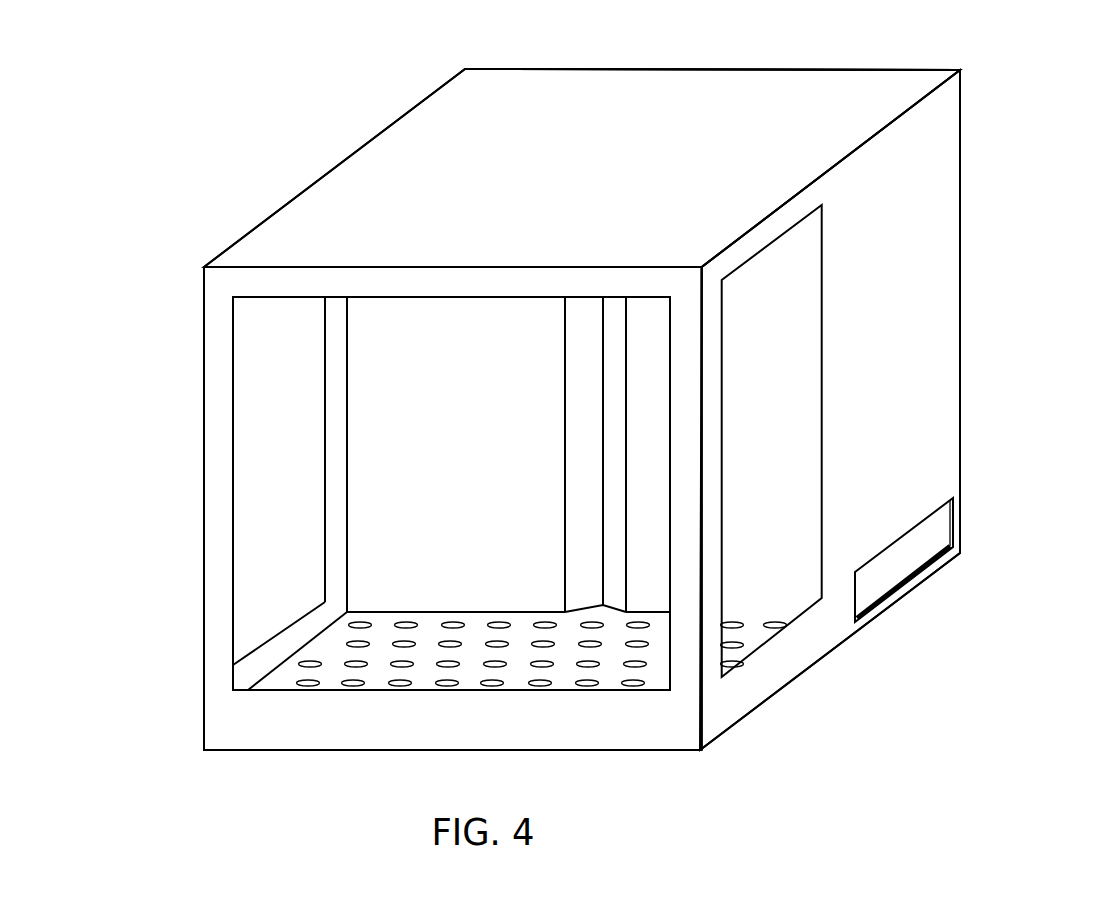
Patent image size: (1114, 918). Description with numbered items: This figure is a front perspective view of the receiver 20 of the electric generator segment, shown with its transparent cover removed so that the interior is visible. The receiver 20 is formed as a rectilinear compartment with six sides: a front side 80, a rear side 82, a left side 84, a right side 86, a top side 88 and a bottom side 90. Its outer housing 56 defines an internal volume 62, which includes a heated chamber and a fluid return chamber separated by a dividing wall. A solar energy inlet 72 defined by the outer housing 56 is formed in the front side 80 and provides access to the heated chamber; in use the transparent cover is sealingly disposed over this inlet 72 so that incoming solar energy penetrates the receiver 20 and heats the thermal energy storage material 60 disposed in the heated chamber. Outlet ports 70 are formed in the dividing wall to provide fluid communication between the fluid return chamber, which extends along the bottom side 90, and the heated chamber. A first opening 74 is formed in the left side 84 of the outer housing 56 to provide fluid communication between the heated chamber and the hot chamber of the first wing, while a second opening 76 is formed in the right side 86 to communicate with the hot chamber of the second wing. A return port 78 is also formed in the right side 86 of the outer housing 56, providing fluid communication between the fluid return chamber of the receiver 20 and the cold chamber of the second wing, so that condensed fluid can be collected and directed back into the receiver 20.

The receiver 20 is at (1000, 97).
The outer housing 56 is at (711, 80).
The thermal energy storage material 60 is at (471, 438).
The internal volume 62 is at (360, 498).
The outlet ports 70 is at (361, 623).
The solar energy inlet 72 is at (433, 298).
The first opening 74 is at (325, 398).
The second opening 76 is at (822, 372).
The return port 78 is at (945, 545).
The front side 80 is at (628, 277).
The rear side 82 is at (960, 167).
The left side 84 is at (203, 360).
The right side 86 is at (937, 275).
The top side 88 is at (531, 170).
The bottom side 90 is at (658, 750).